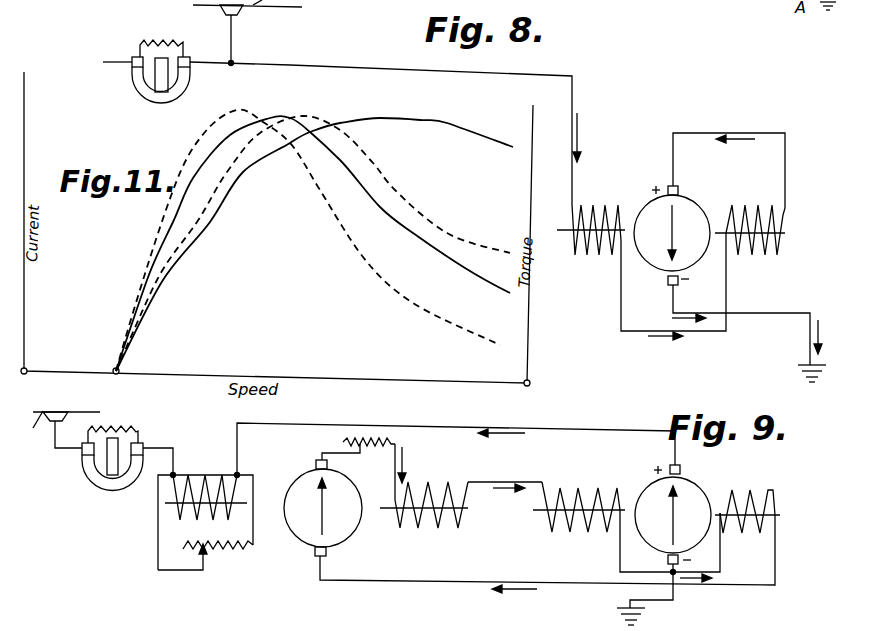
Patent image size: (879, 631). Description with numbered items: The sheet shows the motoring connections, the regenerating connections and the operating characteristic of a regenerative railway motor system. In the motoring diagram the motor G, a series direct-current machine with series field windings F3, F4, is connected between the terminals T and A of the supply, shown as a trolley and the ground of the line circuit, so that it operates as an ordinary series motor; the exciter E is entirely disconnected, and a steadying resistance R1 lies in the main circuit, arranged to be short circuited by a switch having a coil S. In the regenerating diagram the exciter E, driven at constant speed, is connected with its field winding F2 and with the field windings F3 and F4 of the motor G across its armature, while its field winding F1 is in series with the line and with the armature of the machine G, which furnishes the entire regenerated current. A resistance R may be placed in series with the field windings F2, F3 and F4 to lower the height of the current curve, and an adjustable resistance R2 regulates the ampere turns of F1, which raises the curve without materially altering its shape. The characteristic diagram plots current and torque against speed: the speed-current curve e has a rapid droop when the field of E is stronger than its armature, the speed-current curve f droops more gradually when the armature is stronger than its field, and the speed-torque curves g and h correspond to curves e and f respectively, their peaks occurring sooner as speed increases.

In FIG. 8, the steadying resistance R1 is at (168, 40).
In FIG. 9, the steadying resistance R1 is at (118, 428).
In FIG. 8, the switch coil S is at (161, 103).
In FIG. 9, the switch coil S is at (113, 490).
In FIG. 9, the trolley terminal T is at (63, 431).
In FIG. 9, the series field winding of machine E F1 is at (206, 507).
In FIG. 9, the adjustable resistance R2 is at (208, 550).
In FIG. 9, the exciter machine E is at (323, 508).
In FIG. 9, the resistance R is at (367, 455).
In FIG. 9, the series field winding of machine E F2 is at (424, 516).
In FIG. 8, the series field winding of machine G F3 is at (591, 247).
In FIG. 9, the series field winding of machine G F3 is at (579, 519).
In FIG. 8, the motor G is at (672, 235).
In FIG. 9, the motor G is at (673, 514).
In FIG. 8, the series field winding of machine G F4 is at (750, 247).
In FIG. 9, the series field winding of machine G F4 is at (747, 523).
In FIG. 8, the ground terminal A is at (803, 378).
In FIG. 9, the ground terminal A is at (621, 619).
In FIG. 11, the speed-current curve e is at (193, 174).
In FIG. 11, the speed-current curve f is at (247, 173).
In FIG. 11, the speed-torque curve g is at (193, 147).
In FIG. 11, the speed-torque curve h is at (246, 150).